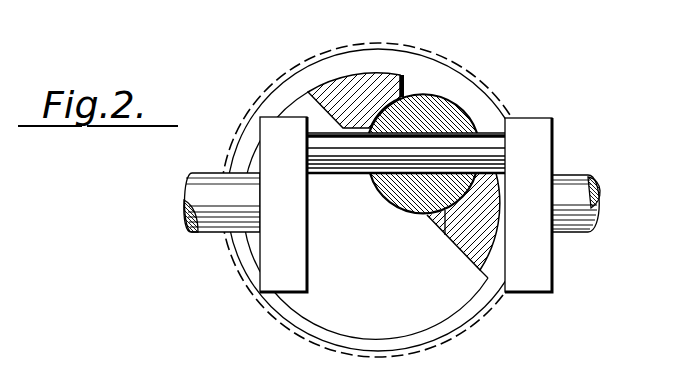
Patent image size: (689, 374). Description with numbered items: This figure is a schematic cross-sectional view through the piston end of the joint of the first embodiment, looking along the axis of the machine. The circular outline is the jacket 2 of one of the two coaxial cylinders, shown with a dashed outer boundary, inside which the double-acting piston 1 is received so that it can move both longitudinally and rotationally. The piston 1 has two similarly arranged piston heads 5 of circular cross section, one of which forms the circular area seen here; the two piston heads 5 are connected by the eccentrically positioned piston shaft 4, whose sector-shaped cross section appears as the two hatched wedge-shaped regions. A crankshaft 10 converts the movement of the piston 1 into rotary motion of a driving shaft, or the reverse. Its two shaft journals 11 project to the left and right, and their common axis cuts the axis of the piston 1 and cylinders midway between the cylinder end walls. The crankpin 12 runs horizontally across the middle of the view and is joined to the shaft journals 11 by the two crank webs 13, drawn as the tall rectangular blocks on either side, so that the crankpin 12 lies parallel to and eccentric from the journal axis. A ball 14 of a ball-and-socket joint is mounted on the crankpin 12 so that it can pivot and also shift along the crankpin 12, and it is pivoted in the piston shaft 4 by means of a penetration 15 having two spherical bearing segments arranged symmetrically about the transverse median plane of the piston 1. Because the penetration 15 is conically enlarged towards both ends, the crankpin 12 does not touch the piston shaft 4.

The double-acting piston 1 is at (490, 78).
The jacket 2 is at (490, 304).
The piston shaft 4 is at (355, 84).
The piston heads 5 is at (380, 294).
The crankshaft 10 is at (583, 163).
The shaft journals 11 is at (203, 190).
The crankpin 12 is at (354, 162).
The crank webs 13 is at (534, 125).
The ball 14 is at (408, 192).
The penetration 15 is at (407, 90).